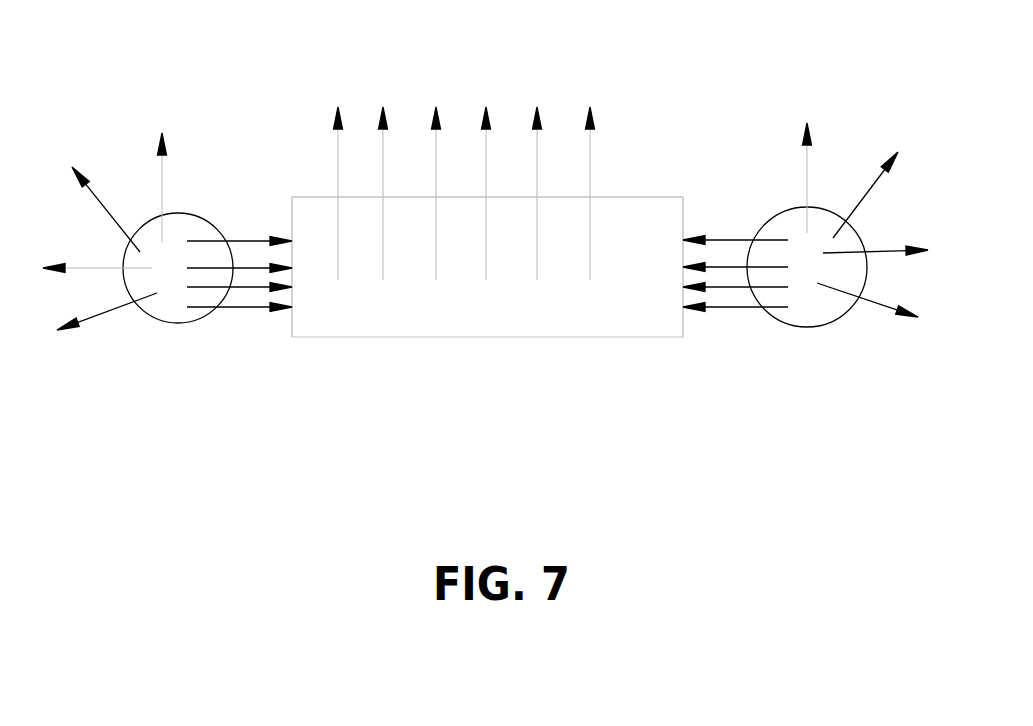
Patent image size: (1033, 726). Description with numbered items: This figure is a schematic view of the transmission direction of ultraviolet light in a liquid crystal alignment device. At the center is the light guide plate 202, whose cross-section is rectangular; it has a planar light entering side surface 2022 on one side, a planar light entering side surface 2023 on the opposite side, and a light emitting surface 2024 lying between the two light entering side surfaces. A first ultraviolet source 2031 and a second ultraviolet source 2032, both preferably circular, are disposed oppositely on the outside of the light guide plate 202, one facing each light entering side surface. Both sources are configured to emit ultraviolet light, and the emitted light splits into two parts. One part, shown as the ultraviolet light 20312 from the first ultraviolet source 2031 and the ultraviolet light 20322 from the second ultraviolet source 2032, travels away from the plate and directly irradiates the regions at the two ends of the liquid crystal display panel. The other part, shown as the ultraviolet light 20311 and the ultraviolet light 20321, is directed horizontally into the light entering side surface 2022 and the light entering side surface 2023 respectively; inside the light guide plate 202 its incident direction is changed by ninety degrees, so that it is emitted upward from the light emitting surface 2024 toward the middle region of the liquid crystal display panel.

The light guide plate 202 is at (510, 320).
The light entering side surface 2022 is at (292, 277).
The light entering side surface 2023 is at (682, 280).
The light emitting surface 2024 is at (625, 197).
The first ultraviolet source 2031 is at (168, 308).
The ultraviolet light 20311 is at (238, 240).
The ultraviolet light 20312 is at (102, 198).
The second ultraviolet source 2032 is at (843, 285).
The ultraviolet light 20321 is at (770, 240).
The ultraviolet light 20322 is at (858, 200).